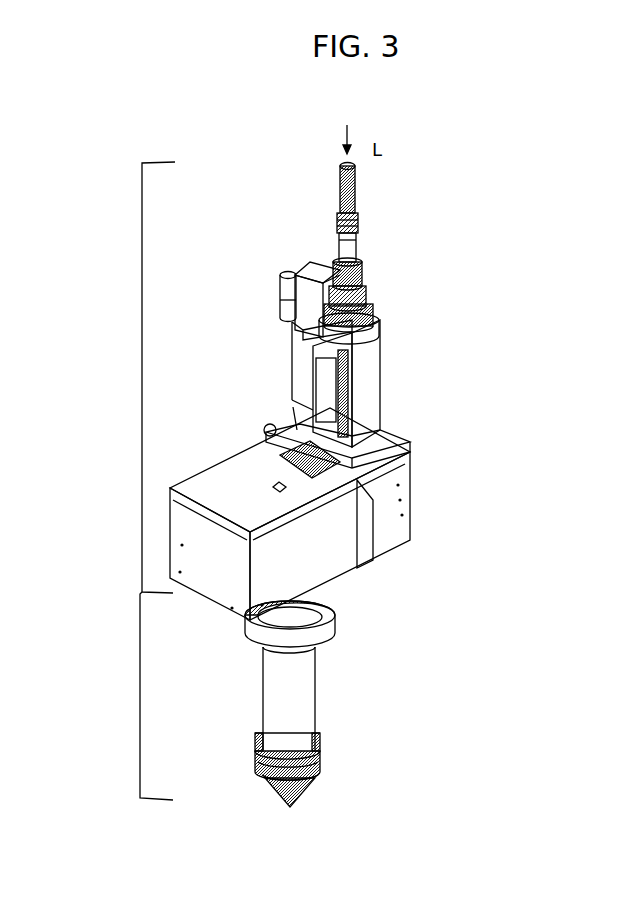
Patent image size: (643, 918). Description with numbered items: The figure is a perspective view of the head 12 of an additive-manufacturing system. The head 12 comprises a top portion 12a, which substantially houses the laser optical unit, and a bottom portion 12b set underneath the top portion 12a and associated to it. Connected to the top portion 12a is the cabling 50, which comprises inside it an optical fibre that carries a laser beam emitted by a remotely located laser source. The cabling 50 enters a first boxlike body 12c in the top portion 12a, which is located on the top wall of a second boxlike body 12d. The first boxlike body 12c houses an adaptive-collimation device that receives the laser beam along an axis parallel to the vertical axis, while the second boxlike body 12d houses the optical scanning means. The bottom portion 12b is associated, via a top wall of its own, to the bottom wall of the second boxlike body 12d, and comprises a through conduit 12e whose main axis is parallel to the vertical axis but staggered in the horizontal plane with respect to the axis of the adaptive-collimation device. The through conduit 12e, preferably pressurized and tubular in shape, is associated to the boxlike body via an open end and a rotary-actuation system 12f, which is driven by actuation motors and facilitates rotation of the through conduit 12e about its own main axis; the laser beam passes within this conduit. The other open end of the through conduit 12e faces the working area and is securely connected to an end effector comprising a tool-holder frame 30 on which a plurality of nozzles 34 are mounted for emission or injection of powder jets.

The head 12 is at (463, 522).
The top portion 12a is at (142, 376).
The bottom portion 12b is at (140, 696).
The first boxlike body 12c is at (378, 392).
The second boxlike body 12d is at (330, 558).
The through conduit 12e is at (298, 690).
The rotary-actuation system 12f is at (335, 632).
The tool-holder frame 30 is at (325, 750).
The nozzles 34 is at (275, 792).
The cabling 50 is at (357, 192).